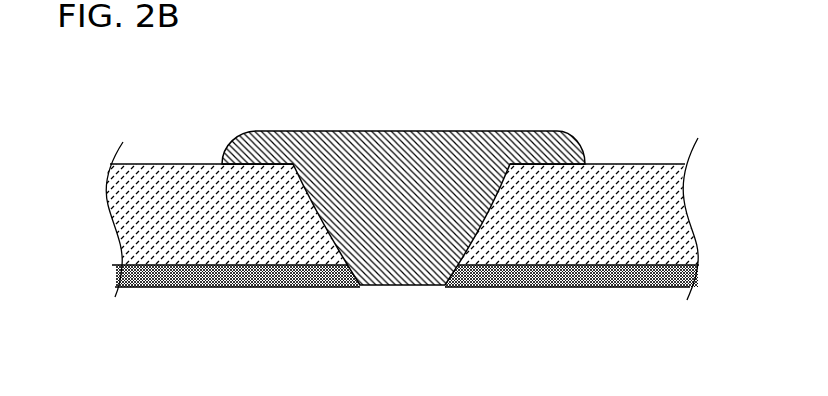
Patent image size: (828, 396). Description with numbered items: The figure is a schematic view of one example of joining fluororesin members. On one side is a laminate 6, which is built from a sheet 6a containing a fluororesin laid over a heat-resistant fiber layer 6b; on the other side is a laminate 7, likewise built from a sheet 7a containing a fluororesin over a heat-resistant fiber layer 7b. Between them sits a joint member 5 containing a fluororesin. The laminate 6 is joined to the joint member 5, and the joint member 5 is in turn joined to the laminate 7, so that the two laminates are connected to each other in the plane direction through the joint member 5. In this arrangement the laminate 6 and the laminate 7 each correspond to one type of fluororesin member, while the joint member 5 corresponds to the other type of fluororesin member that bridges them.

The joint member 5 is at (448, 140).
The laminate 6 is at (610, 162).
The sheet 6a is at (653, 192).
The heat-resistant fiber layer 6b is at (563, 275).
The laminate 7 is at (197, 162).
The sheet 7a is at (153, 192).
The heat-resistant fiber layer 7b is at (230, 275).